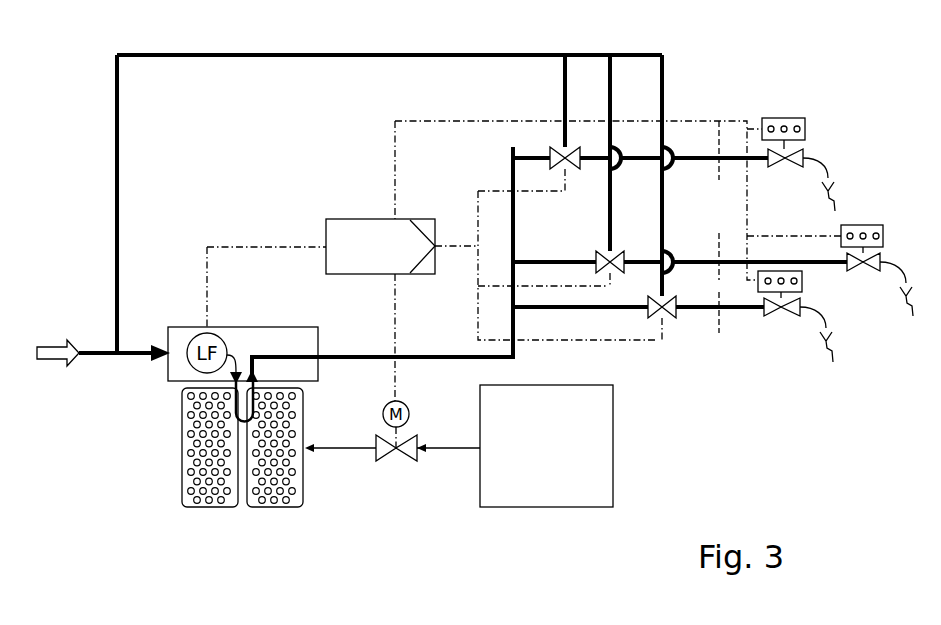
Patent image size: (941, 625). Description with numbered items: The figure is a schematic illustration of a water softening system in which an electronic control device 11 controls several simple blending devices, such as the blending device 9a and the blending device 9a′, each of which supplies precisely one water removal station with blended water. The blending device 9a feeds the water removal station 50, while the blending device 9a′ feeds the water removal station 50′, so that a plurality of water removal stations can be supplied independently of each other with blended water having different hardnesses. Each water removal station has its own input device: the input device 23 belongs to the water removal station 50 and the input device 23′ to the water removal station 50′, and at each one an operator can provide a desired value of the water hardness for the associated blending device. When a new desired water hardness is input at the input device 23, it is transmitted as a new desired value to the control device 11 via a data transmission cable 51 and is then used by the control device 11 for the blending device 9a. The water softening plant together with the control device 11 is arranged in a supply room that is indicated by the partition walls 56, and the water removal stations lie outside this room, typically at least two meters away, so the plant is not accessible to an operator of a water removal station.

The control device 11 is at (326, 228).
The blending device 9a is at (665, 319).
The blending device 9a′ is at (613, 252).
The input device 23 is at (798, 282).
The input device 23′ is at (862, 232).
The water removal station 50 is at (797, 346).
The water removal station 50′ is at (887, 215).
The data transmission cable 51 is at (685, 120).
The partition walls 56 is at (719, 120).